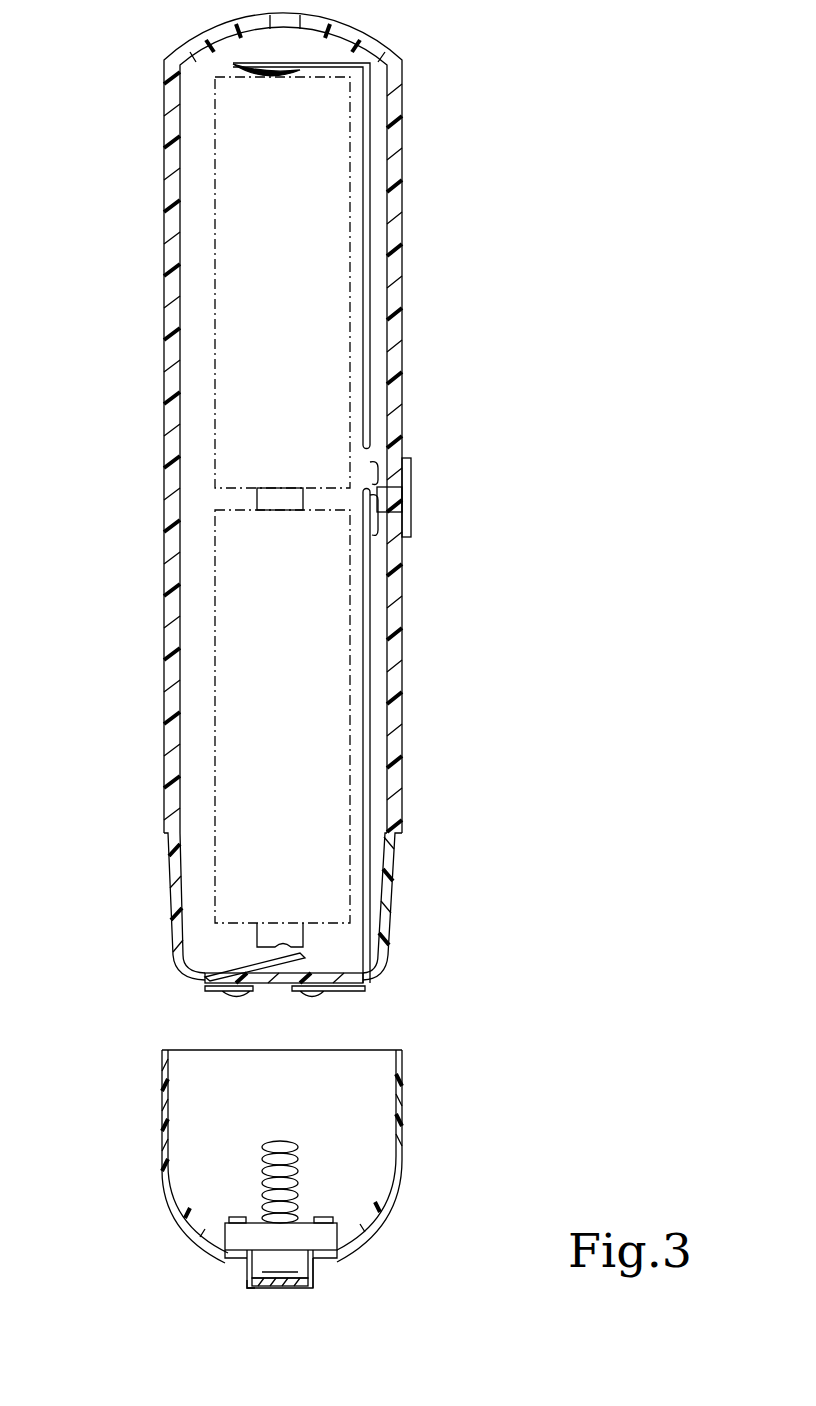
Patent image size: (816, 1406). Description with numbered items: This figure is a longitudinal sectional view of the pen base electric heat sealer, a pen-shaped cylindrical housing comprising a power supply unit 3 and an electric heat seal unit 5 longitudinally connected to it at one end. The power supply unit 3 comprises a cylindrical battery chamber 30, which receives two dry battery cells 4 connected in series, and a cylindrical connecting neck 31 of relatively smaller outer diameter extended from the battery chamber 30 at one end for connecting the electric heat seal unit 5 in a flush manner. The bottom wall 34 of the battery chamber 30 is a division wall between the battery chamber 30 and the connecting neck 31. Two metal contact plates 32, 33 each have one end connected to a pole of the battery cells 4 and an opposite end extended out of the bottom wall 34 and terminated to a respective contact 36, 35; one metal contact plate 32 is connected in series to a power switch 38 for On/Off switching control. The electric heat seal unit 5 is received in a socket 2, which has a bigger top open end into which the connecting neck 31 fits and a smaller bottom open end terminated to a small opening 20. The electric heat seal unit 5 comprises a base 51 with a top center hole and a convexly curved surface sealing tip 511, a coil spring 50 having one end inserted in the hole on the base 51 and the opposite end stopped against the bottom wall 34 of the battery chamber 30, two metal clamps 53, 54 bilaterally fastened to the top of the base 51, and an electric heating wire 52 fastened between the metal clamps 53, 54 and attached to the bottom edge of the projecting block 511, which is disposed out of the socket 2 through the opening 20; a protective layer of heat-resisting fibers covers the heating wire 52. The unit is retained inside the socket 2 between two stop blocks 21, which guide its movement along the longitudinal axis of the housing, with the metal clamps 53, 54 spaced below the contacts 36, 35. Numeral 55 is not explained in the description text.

The socket 2 is at (150, 1103).
The power supply unit 3 is at (283, 496).
The dry battery cell 4 is at (215, 300).
The electric heat seal unit 5 is at (392, 1222).
The small opening 20 is at (318, 1274).
The stop block 21 is at (228, 1240).
The battery chamber 30 is at (395, 358).
The connecting neck 31 is at (392, 850).
The metal contact plate 32 is at (365, 612).
The metal contact plate 33 is at (232, 965).
The bottom wall 34 is at (276, 985).
The contact 35 is at (218, 993).
The contact 36 is at (322, 993).
The power switch 38 is at (408, 487).
The coil spring 50 is at (300, 1158).
The base 51 is at (272, 1262).
The sealing tip 511 is at (287, 1274).
The electric heating wire 52 is at (302, 1284).
The metal clamp 53 is at (322, 1220).
The metal clamp 54 is at (238, 1218).
The housing flange 55 is at (246, 1300).